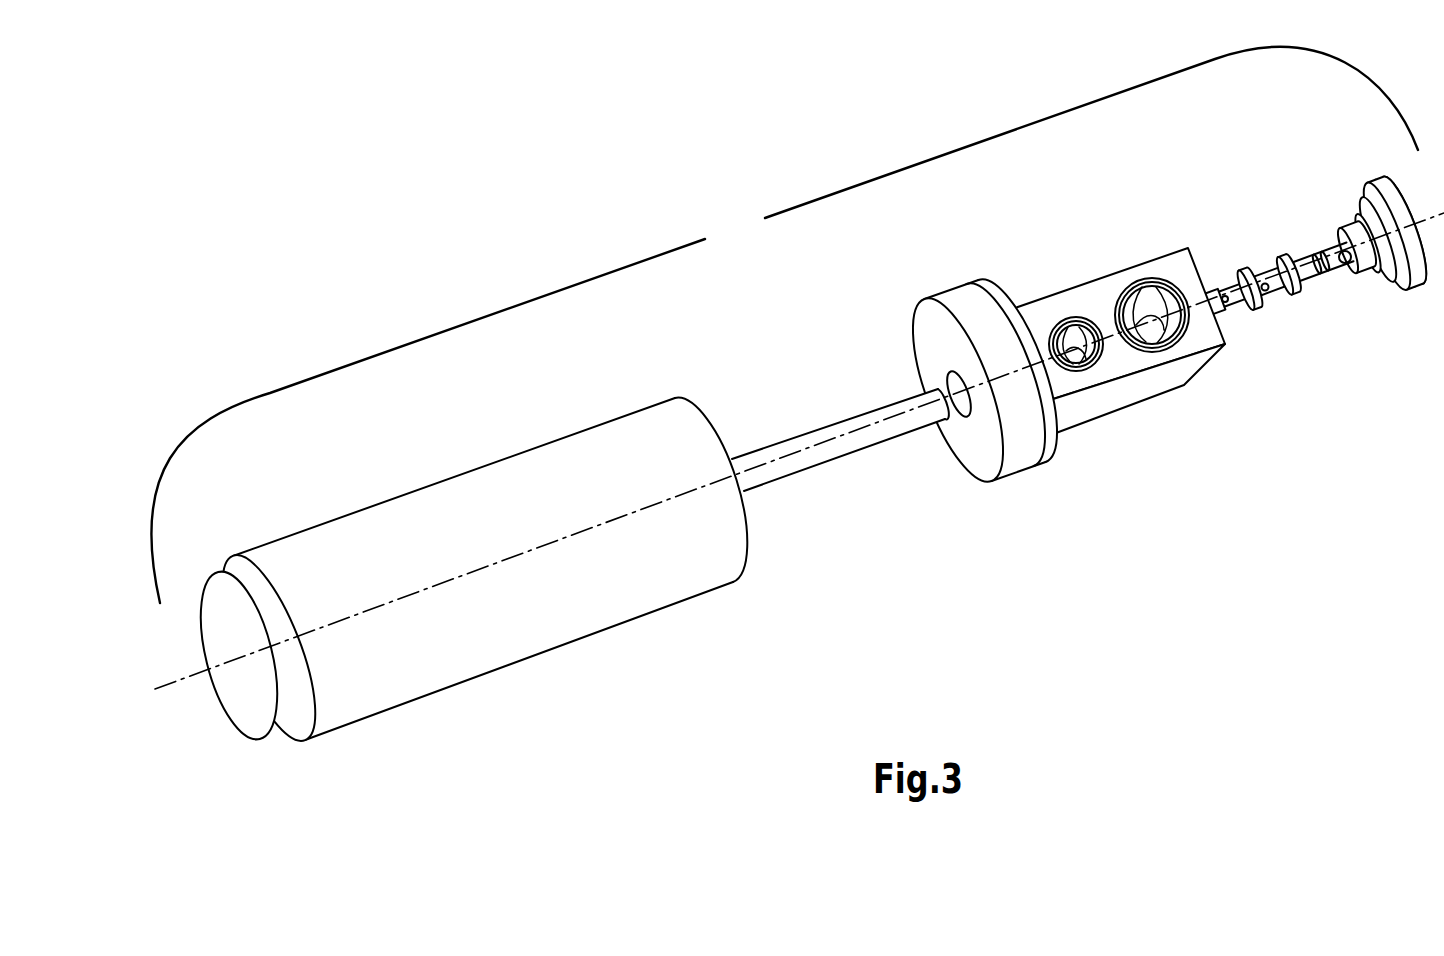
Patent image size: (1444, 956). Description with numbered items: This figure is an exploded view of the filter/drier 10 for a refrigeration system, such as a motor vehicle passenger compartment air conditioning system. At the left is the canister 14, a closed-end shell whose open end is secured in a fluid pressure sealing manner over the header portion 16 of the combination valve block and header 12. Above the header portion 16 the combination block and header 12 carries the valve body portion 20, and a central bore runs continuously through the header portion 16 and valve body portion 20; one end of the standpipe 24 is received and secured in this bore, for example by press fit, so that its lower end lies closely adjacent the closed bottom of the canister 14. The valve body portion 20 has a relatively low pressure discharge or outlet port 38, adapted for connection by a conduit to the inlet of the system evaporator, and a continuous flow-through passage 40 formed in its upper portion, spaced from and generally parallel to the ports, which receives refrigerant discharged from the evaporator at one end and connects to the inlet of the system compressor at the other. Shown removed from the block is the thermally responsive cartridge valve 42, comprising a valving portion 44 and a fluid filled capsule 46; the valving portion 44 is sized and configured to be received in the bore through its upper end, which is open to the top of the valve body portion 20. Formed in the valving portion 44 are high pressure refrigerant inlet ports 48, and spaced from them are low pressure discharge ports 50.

The filter/drier 10 is at (705, 239).
The combination valve block and header 12 is at (1070, 460).
The canister 14 is at (533, 652).
The header portion 16 is at (957, 302).
The valve body portion 20 is at (1285, 332).
The standpipe 24 is at (860, 412).
The outlet port 38 is at (1074, 319).
The flow-through passage 40 is at (1147, 280).
The thermally responsive cartridge valve 42 is at (1340, 206).
The valving portion 44 is at (1246, 316).
The fluid filled capsule 46 is at (1405, 310).
The high pressure refrigerant inlet ports 48 is at (1215, 290).
The low pressure discharge ports 50 is at (1262, 272).